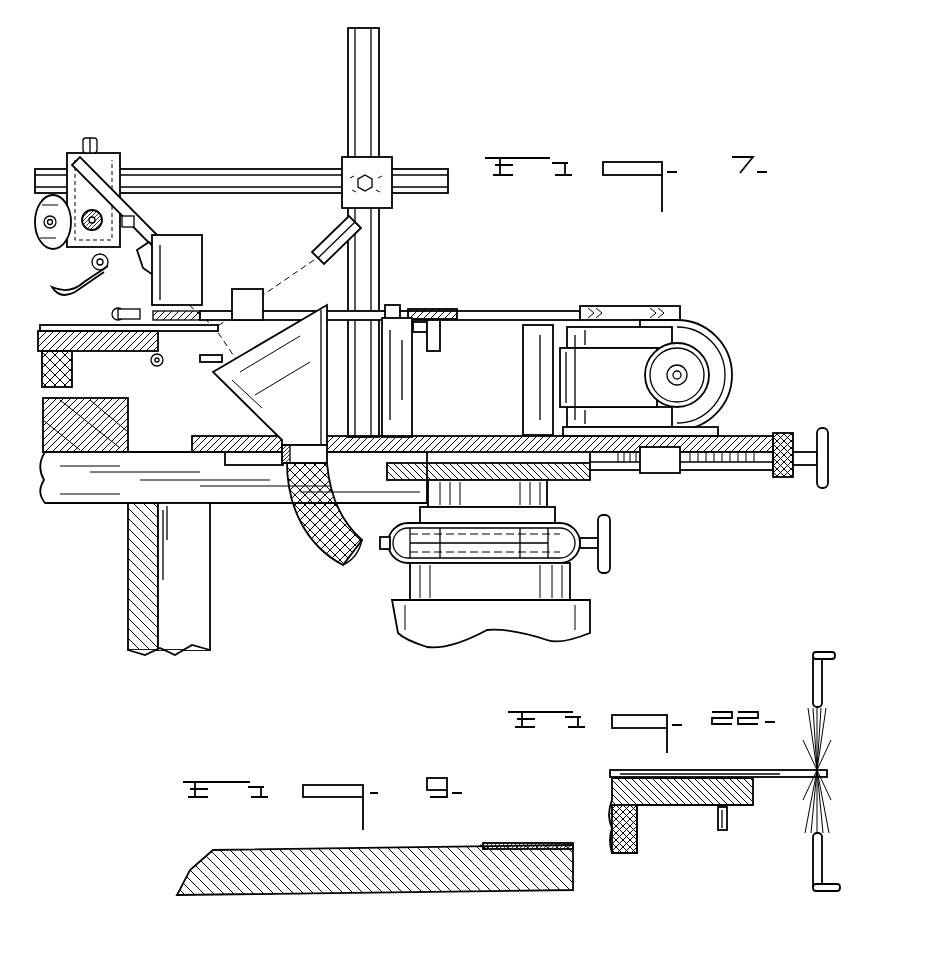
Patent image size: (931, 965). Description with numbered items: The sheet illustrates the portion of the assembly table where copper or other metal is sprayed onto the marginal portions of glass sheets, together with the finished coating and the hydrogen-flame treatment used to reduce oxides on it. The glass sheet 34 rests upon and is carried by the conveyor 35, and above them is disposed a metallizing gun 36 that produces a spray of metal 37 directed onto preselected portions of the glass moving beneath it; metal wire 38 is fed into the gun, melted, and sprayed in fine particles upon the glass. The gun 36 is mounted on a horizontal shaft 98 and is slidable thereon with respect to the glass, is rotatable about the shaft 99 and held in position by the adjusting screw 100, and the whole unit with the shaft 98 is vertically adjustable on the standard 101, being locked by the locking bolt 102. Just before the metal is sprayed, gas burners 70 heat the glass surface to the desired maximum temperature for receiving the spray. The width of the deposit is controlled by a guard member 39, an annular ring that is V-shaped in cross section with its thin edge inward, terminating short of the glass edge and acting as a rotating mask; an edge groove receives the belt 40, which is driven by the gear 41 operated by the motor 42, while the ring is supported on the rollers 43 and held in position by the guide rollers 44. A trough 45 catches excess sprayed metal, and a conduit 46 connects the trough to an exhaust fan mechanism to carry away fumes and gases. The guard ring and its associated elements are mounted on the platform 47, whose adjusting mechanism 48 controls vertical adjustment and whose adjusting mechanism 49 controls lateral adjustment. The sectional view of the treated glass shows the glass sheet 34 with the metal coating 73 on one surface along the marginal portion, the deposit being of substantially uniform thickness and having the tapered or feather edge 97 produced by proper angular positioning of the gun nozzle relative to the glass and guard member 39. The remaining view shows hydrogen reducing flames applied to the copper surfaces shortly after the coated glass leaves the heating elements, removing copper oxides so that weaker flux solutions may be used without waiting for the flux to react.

In FIG. 7, the glass sheet 34 is at (73, 325).
In FIG. 9, the glass sheet 34 is at (252, 853).
In FIG. 7, the conveyor 35 is at (82, 351).
In FIG. 7, the metallizing gun 36 is at (111, 183).
In FIG. 7, the spray of metal 37 is at (185, 296).
In FIG. 7, the metal wire 38 is at (56, 168).
In FIG. 7, the guard member 39 is at (440, 306).
In FIG. 7, the belt 40 is at (514, 310).
In FIG. 7, the gear 41 is at (638, 307).
In FIG. 7, the motor 42 is at (590, 377).
In FIG. 7, the rollers 43 is at (207, 360).
In FIG. 7, the guide rollers 44 is at (250, 291).
In FIG. 7, the trough 45 is at (317, 387).
In FIG. 7, the conduit 46 is at (301, 524).
In FIG. 7, the platform 47 is at (512, 436).
In FIG. 7, the adjusting mechanism 48 is at (553, 528).
In FIG. 7, the adjusting mechanism 49 is at (805, 455).
In FIG. 7, the burners 70 is at (332, 240).
In FIG. 9, the coating 73 is at (530, 843).
In FIG. 9, the feather edge 97 is at (483, 845).
In FIG. 7, the horizontal shaft 98 is at (233, 181).
In FIG. 7, the shaft 99 is at (95, 212).
In FIG. 7, the adjusting screw 100 is at (135, 219).
In FIG. 7, the standard 101 is at (368, 102).
In FIG. 7, the locking bolt 102 is at (372, 177).